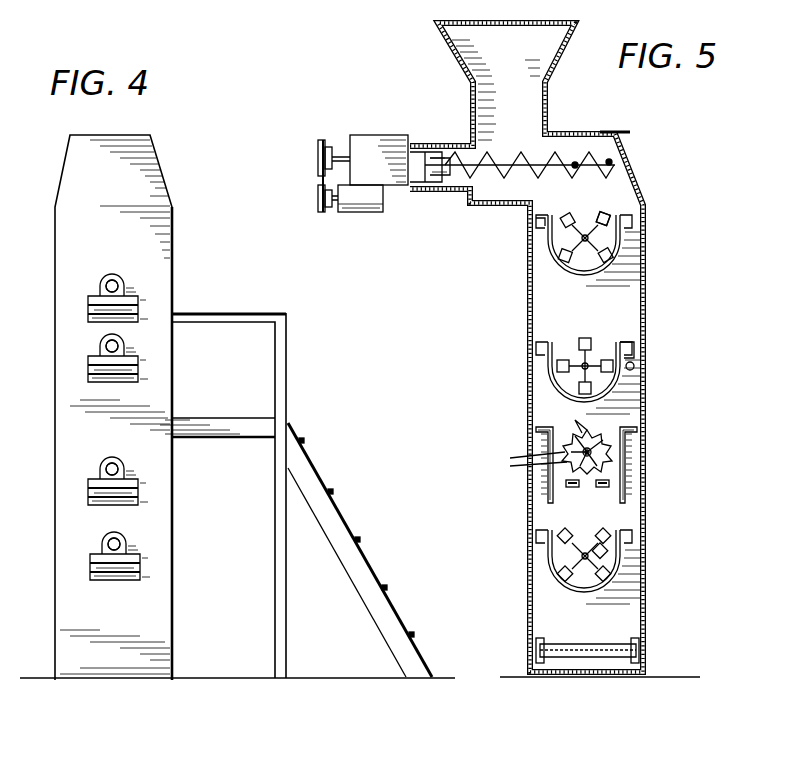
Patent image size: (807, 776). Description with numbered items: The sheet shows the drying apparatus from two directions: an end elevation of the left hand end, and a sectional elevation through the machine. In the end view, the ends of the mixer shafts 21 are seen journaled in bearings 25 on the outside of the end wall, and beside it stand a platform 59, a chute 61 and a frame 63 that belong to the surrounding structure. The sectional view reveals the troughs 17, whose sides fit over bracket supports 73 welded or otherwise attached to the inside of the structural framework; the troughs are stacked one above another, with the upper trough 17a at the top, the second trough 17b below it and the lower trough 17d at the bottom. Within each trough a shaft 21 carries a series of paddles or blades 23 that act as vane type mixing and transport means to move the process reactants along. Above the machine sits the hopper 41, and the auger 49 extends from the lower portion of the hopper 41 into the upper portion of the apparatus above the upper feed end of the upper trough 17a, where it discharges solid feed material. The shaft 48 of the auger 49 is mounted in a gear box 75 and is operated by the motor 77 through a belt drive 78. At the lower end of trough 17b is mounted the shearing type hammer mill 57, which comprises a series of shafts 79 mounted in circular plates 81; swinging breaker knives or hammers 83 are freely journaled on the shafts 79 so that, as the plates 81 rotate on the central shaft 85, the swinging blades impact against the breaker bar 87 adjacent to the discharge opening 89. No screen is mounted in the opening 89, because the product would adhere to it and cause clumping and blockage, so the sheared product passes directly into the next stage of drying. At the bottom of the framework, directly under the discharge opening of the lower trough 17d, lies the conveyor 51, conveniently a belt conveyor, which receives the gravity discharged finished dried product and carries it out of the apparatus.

In FIG. 5, the troughs 17 is at (584, 288).
In FIG. 5, the upper trough 17a is at (556, 262).
In FIG. 5, the second trough 17b is at (556, 378).
In FIG. 5, the lower trough 17d is at (597, 588).
In FIG. 4, the shaft 21 is at (105, 283).
In FIG. 5, the shaft 21 is at (600, 231).
In FIG. 5, the paddles or blades 23 is at (574, 226).
In FIG. 4, the bearings 25 is at (118, 276).
In FIG. 5, the hopper 41 is at (558, 50).
In FIG. 5, the shaft of the auger 48 is at (617, 135).
In FIG. 5, the auger 49 is at (481, 162).
In FIG. 5, the conveyor 51 is at (590, 660).
In FIG. 5, the hammer mill 57 is at (608, 432).
In FIG. 4, the platform 59 is at (197, 418).
In FIG. 4, the chute 61 is at (358, 580).
In FIG. 4, the frame 63 is at (229, 313).
In FIG. 5, the bracket supports 73 is at (634, 372).
In FIG. 5, the gear box 75 is at (366, 146).
In FIG. 5, the motor 77 is at (362, 213).
In FIG. 5, the belt drive 78 is at (318, 178).
In FIG. 5, the shafts 79 is at (580, 432).
In FIG. 5, the circular plates 81 is at (636, 467).
In FIG. 5, the swinging breaker knives or hammers 83 is at (566, 460).
In FIG. 5, the central shaft 85 is at (556, 460).
In FIG. 5, the breaker bar 87 is at (572, 490).
In FIG. 5, the discharge opening 89 is at (612, 492).